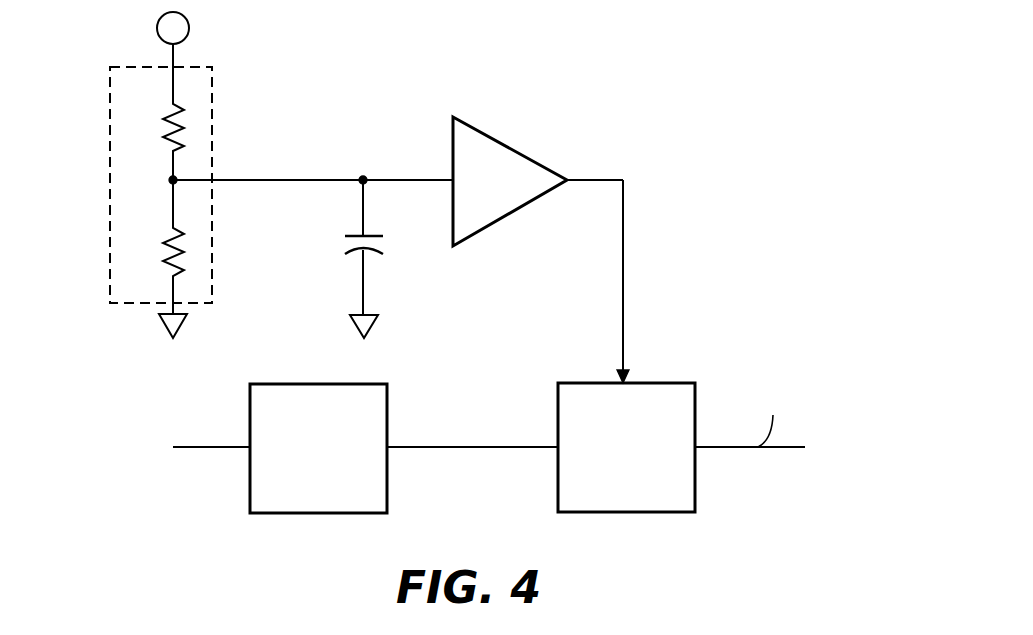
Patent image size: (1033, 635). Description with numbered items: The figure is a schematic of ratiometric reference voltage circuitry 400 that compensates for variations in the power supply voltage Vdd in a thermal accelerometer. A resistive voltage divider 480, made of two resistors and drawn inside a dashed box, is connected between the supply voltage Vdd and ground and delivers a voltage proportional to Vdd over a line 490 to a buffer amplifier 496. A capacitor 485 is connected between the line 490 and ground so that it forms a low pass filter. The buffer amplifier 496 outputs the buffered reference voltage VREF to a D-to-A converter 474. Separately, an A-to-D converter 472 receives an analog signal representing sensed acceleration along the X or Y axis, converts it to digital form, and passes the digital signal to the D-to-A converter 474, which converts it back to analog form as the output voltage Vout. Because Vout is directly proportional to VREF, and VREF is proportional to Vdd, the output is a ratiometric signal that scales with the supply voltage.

The ratiometric reference voltage circuitry 400 is at (688, 129).
The voltage divider 480 is at (108, 193).
The line 490 is at (276, 180).
The capacitor 485 is at (385, 243).
The buffer amplifier 496 is at (512, 148).
The A-to-D converter 472 is at (302, 384).
The D-to-A converter 474 is at (582, 383).